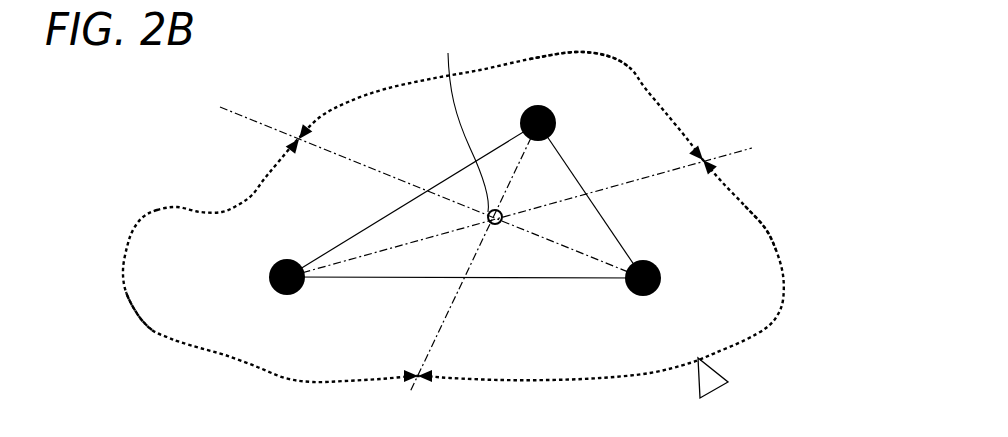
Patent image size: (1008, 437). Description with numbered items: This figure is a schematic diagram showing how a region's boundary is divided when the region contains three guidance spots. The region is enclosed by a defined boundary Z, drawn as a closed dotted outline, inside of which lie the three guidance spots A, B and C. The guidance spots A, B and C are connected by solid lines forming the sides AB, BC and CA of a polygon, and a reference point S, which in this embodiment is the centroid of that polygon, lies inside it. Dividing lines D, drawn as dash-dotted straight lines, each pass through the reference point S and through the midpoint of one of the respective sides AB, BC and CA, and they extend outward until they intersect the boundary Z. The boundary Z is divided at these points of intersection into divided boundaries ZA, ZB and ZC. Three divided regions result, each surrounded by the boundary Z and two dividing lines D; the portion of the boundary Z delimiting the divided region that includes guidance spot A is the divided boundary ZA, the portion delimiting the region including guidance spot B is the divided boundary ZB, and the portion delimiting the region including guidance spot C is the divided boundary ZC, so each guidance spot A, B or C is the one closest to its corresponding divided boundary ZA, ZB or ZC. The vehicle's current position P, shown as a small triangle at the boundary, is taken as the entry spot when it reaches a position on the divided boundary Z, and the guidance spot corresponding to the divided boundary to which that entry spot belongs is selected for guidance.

The guidance spot A is at (287, 291).
The guidance spot B is at (538, 108).
The guidance spot C is at (643, 293).
The dividing line D is at (253, 120).
The reference point S is at (465, 118).
The current position P is at (728, 382).
The boundary Z is at (787, 293).
The divided boundary ZA is at (163, 338).
The divided boundary ZB is at (625, 68).
The divided boundary ZC is at (768, 224).